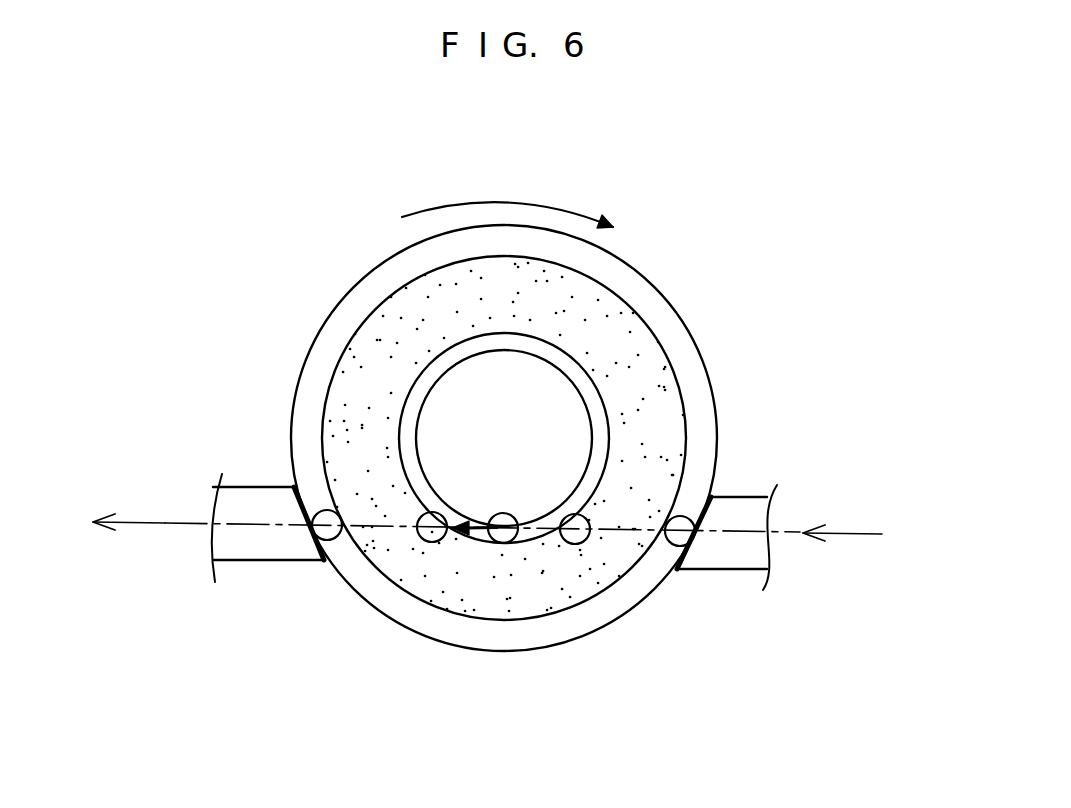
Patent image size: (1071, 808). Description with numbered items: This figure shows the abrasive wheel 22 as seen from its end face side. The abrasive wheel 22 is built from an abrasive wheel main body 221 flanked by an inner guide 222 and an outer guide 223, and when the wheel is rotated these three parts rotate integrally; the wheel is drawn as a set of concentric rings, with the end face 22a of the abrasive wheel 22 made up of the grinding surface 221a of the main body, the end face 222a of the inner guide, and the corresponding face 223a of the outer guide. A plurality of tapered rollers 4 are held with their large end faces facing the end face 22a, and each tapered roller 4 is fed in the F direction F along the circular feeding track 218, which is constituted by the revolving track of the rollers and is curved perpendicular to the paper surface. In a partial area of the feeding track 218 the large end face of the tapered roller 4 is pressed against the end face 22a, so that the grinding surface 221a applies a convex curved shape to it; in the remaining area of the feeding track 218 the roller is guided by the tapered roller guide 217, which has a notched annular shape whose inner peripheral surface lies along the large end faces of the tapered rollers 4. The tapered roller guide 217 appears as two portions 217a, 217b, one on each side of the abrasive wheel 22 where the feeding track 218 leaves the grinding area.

The abrasive wheel 22 is at (200, 170).
The abrasive wheel main body 221 is at (390, 313).
The inner guide 222 is at (440, 343).
The outer guide 223 is at (337, 322).
The end face 22a is at (818, 173).
The grinding surface 221a is at (622, 327).
The end face 222a is at (600, 405).
The outer ring 223a is at (620, 275).
The tapered roller guide 217 is at (498, 488).
The shaft end 217a is at (743, 497).
The shaft end 217b is at (253, 490).
The tapered roller 4 is at (508, 513).
The F direction F is at (480, 523).
The feeding track 218 is at (638, 532).